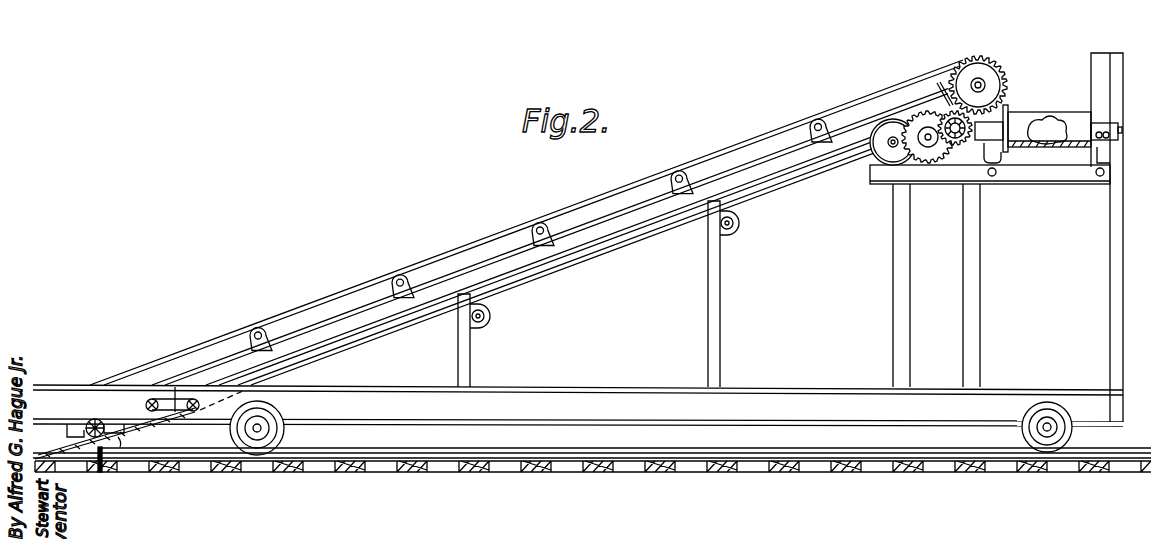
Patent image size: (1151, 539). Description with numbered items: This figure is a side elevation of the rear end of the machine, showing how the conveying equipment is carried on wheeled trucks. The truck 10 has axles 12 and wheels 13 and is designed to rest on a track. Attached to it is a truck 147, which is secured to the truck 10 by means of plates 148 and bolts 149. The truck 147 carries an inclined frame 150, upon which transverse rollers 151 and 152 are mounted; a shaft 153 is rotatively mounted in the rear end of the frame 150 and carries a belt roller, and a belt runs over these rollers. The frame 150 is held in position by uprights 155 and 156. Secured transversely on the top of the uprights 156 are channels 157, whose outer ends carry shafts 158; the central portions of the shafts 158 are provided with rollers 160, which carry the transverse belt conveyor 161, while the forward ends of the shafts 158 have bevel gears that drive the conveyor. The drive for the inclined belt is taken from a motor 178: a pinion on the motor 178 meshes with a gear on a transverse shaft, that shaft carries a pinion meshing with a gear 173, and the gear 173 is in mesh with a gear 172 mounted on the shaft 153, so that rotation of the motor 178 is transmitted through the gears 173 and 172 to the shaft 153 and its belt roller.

The truck 10 is at (578, 394).
The axles 12 is at (578, 415).
The wheels 13 is at (70, 435).
The truck 147 is at (651, 428).
The plates 148 is at (164, 396).
The bolts 149 is at (145, 404).
The inclined frame 150 is at (528, 277).
The transverse rollers 151 is at (541, 226).
The transverse rollers 152 is at (485, 321).
The shaft 153 is at (983, 83).
The uprights 155 is at (724, 300).
The uprights 156 is at (980, 248).
The channels 157 is at (984, 165).
The shafts 158 is at (1123, 122).
The rollers 160 is at (1049, 129).
The transverse belt conveyor 161 is at (1010, 120).
The gear 172 is at (968, 62).
The gear 173 is at (948, 104).
The motor 178 is at (891, 135).